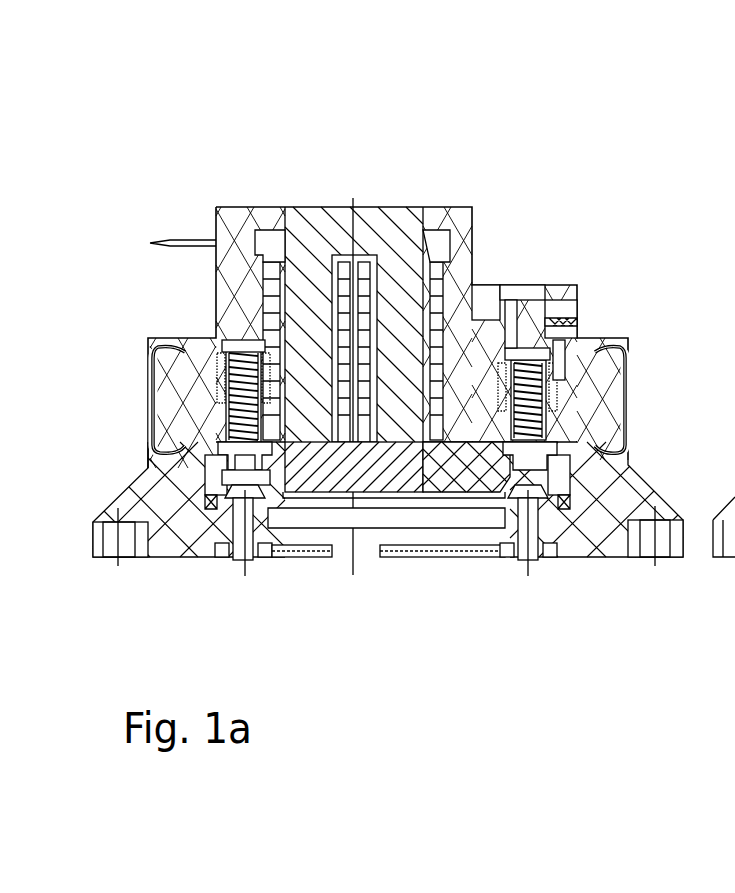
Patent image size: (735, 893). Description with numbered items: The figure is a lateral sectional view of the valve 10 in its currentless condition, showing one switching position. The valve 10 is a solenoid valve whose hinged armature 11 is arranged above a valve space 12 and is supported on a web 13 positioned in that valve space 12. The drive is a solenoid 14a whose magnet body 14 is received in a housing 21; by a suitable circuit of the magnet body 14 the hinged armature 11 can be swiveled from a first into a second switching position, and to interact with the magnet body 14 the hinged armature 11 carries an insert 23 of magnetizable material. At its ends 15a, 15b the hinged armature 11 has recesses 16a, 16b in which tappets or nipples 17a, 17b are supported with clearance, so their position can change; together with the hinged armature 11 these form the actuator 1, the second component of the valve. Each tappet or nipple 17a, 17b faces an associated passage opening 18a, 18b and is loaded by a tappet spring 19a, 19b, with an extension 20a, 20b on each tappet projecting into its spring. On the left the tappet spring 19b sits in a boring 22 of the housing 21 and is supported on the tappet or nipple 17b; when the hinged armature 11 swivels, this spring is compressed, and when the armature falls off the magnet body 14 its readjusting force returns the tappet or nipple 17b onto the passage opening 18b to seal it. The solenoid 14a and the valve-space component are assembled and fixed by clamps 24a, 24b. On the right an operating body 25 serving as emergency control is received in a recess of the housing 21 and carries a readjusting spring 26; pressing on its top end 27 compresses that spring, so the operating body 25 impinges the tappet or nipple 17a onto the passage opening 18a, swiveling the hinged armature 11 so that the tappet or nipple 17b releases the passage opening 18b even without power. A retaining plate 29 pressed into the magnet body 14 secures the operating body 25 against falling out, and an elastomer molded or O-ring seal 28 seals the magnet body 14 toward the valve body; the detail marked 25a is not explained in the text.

The actuator 1 is at (465, 508).
The valve 10 is at (463, 150).
The hinged armature 11 is at (510, 478).
The valve space 12 is at (420, 560).
The web 13 is at (394, 528).
The magnet body 14 is at (385, 207).
The solenoid 14a is at (319, 202).
The end of hinged armature 15a is at (568, 447).
The end of hinged armature 15b is at (178, 537).
The recess 16a is at (545, 505).
The recess 16b is at (240, 560).
The tappet or nipple 17a is at (555, 485).
The tappet or nipple 17b is at (215, 478).
The passage opening 18a is at (498, 540).
The passage opening 18b is at (260, 540).
The tappet spring 19a is at (533, 362).
The tappet spring 19b is at (222, 342).
The extension 20a is at (540, 443).
The extension 20b is at (235, 451).
The housing 21 is at (216, 208).
The boring 22 is at (235, 350).
The insert 23 is at (347, 482).
The clamp 24a is at (628, 385).
The clamp 24b is at (165, 356).
The operating body 25 is at (530, 282).
The housing recess 25a is at (518, 278).
The readjusting spring 26 is at (536, 366).
The top end of operating body 27 is at (545, 292).
The elastomer molded seal or O-ring seal 28 is at (242, 500).
The retaining plate 29 is at (573, 308).